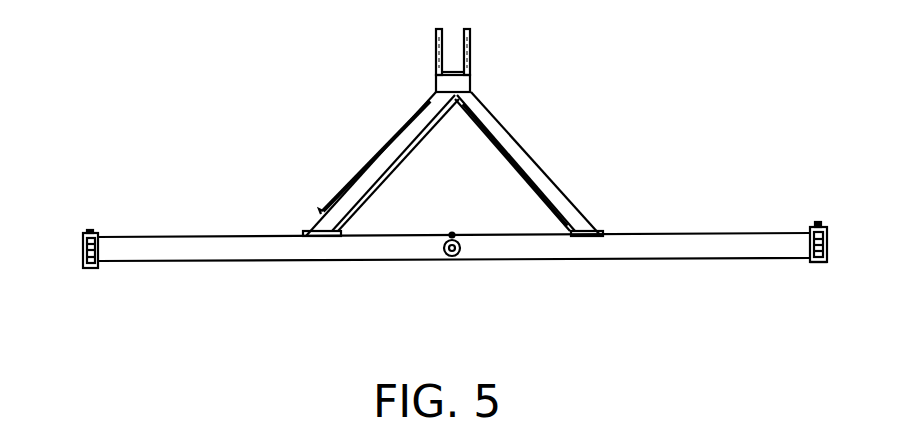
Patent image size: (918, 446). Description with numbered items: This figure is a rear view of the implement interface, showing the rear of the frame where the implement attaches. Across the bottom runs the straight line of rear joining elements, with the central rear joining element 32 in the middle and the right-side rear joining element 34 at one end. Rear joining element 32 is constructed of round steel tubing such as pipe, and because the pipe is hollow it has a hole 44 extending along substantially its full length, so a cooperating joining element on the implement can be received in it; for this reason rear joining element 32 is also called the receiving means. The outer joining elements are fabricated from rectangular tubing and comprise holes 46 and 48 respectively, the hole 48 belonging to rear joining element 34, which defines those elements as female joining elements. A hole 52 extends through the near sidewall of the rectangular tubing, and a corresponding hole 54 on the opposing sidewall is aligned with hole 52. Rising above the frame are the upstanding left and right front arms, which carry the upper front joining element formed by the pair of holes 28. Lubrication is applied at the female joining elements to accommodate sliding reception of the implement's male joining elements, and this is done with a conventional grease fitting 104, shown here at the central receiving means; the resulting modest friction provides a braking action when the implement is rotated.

The pair of holes 28 is at (472, 53).
The rear joining element 32 is at (462, 252).
The rear joining element 34 is at (820, 262).
The hole 44 is at (445, 243).
The hole 46 is at (98, 239).
The hole 48 is at (810, 228).
The hole 52 is at (83, 255).
The hole 54 is at (97, 252).
The grease fitting 104 is at (452, 235).